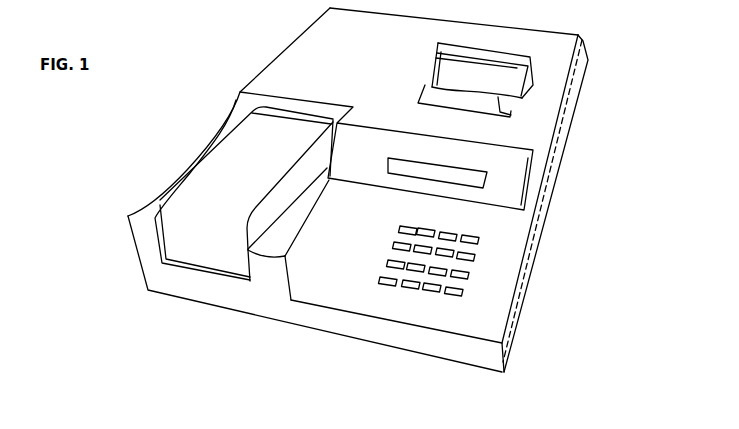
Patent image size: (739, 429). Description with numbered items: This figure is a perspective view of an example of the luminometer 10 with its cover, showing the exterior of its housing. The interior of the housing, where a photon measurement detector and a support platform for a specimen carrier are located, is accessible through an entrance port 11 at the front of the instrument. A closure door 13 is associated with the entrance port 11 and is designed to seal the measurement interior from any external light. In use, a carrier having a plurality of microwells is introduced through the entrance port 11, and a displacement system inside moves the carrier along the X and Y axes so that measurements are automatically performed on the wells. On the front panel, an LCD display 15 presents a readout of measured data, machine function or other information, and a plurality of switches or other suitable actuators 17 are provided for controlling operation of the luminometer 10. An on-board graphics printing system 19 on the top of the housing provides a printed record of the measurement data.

The luminometer 10 is at (262, 41).
The entrance port 11 is at (246, 166).
The closure door 13 is at (207, 222).
The LCD display 15 is at (450, 175).
The switches or actuators 17 is at (488, 278).
The on-board graphics printing system 19 is at (547, 84).